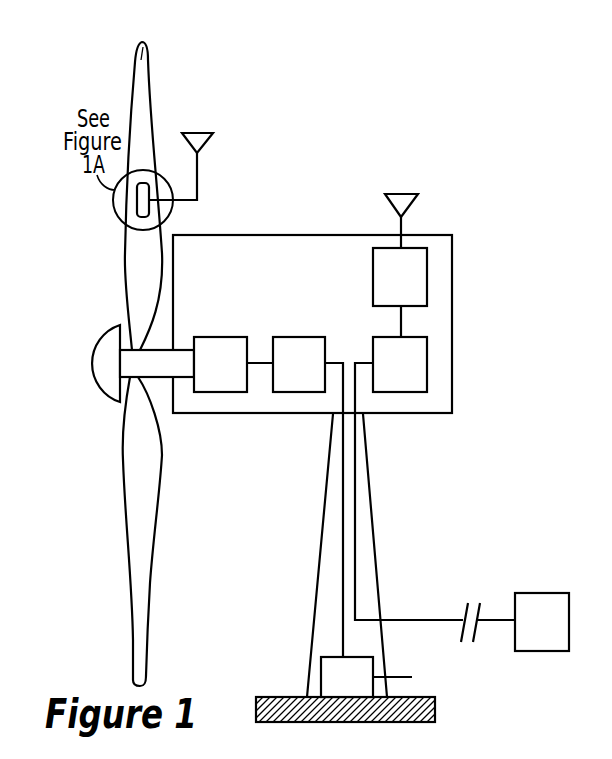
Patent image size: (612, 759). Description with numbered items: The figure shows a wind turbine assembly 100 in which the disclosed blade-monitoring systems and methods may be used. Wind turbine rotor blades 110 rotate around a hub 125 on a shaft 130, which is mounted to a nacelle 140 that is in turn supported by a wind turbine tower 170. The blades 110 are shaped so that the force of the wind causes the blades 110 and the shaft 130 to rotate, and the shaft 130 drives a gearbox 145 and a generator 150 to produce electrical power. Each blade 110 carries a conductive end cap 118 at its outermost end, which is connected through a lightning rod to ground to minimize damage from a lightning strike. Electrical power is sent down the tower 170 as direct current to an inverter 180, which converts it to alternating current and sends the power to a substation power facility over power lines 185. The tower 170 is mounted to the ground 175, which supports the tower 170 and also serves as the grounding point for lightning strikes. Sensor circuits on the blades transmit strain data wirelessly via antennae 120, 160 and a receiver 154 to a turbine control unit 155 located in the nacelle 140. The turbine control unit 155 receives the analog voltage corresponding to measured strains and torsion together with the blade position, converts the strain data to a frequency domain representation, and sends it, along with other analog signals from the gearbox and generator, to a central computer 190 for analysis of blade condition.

The wind turbine assembly 100 is at (372, 120).
The wind turbine rotor blade 110 is at (127, 265).
The conductive end cap 118 is at (137, 55).
The antenna 120 is at (207, 130).
The hub 125 is at (105, 335).
The shaft 130 is at (125, 407).
The nacelle 140 is at (295, 290).
The gearbox 145 is at (239, 380).
The generator 150 is at (318, 380).
The receiver 154 is at (419, 290).
The turbine control unit 155 is at (419, 380).
The antenna 160 is at (405, 193).
The wind turbine tower 170 is at (322, 547).
The ground 175 is at (283, 695).
The inverter 180 is at (365, 690).
The power lines 185 is at (397, 677).
The central computer 190 is at (558, 635).